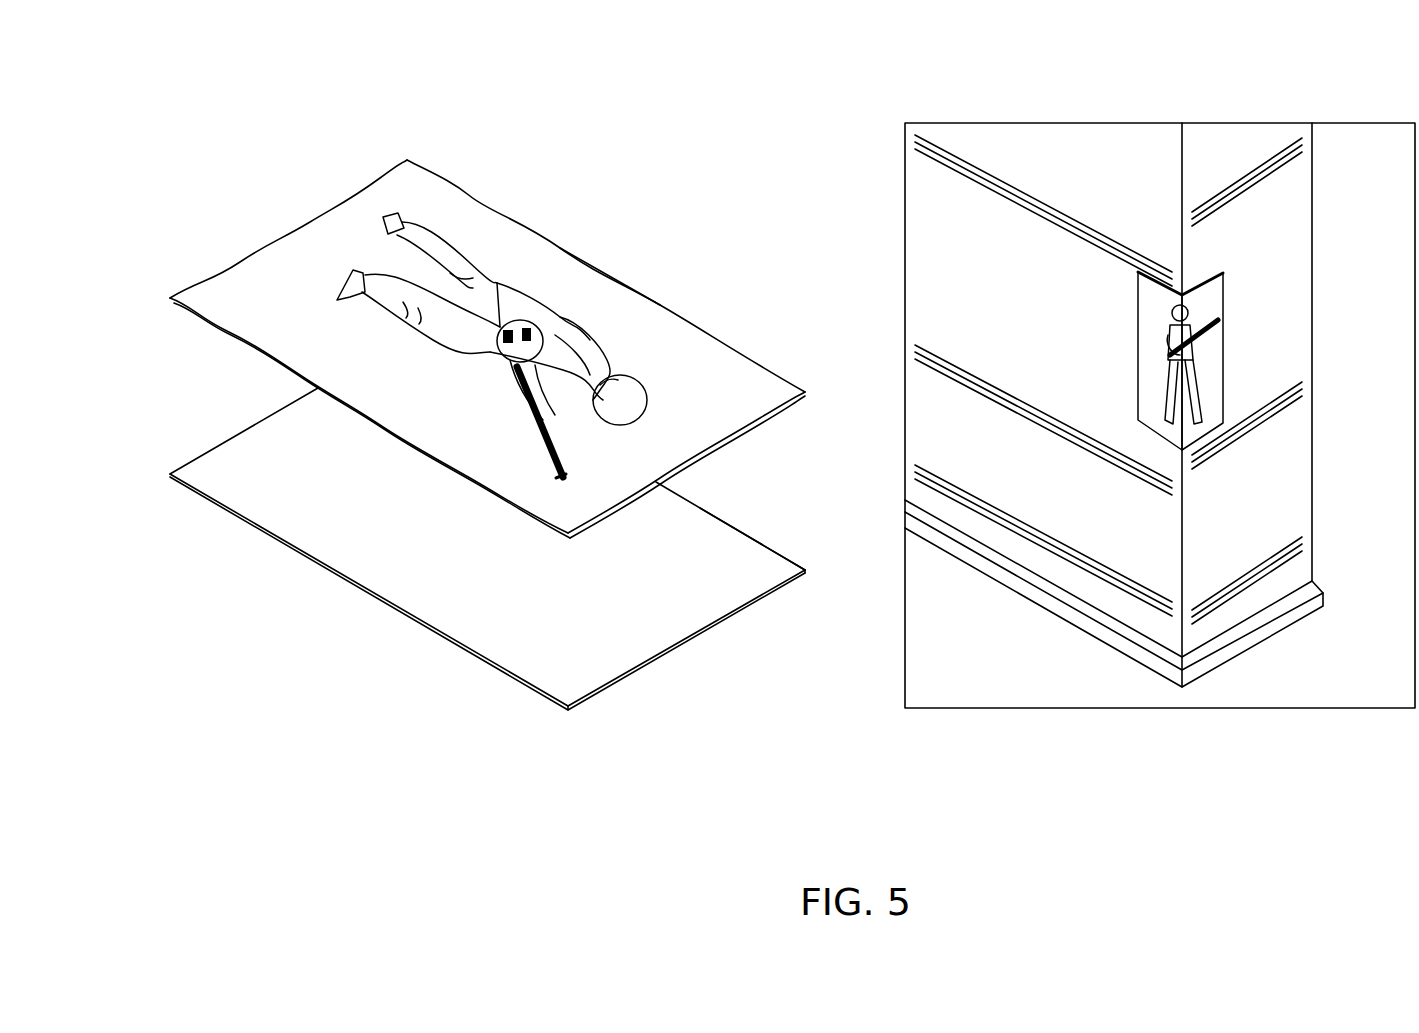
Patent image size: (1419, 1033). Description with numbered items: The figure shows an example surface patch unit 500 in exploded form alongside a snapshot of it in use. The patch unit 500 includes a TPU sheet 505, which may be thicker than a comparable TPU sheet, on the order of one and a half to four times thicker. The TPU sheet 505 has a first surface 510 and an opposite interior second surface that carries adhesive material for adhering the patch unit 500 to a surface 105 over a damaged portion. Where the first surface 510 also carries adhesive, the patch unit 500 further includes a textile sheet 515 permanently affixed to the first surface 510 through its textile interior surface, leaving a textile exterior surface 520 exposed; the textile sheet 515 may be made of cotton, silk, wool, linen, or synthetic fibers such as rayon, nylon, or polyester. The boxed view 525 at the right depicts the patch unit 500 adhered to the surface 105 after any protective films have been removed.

The surface patch unit 500 is at (274, 102).
The TPU sheet 505 is at (315, 562).
The first surface 510 is at (765, 558).
The textile sheet 515 is at (212, 326).
The textile exterior surface 520 is at (653, 333).
The view 525 is at (1100, 123).
The surface 105 is at (1283, 255).